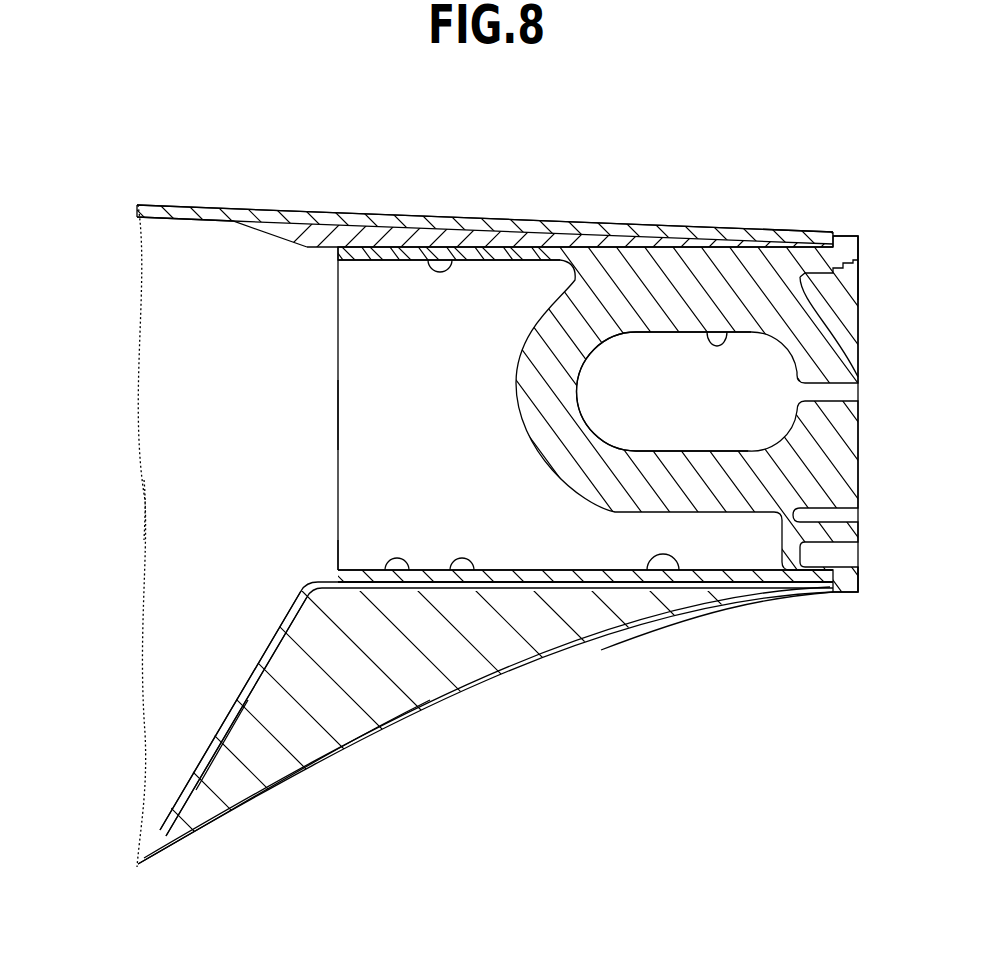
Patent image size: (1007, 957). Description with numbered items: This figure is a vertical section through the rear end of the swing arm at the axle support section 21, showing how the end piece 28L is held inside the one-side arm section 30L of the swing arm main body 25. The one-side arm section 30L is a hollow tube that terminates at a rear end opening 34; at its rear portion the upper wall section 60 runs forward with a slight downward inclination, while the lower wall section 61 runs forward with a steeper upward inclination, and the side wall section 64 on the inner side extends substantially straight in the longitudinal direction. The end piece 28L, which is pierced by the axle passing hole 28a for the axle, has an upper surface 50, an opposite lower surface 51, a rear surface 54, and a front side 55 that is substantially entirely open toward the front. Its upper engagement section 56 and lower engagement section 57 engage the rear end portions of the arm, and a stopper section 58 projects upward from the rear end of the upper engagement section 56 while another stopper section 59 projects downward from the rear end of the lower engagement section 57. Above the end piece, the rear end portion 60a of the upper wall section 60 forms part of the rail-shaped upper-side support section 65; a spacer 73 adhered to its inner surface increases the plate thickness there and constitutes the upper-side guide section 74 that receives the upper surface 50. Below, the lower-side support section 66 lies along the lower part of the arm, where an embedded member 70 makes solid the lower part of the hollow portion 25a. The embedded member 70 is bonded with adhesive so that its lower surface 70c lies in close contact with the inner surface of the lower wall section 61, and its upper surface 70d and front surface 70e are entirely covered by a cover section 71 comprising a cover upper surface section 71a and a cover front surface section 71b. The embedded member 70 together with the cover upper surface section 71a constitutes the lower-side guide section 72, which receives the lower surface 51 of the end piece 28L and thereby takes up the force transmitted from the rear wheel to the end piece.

The axle support section 21 is at (797, 210).
The swing arm main body 25 is at (178, 202).
The hollow portion 25a is at (276, 567).
The end piece 28L is at (333, 331).
The axle passing hole 28a is at (728, 336).
The one-side arm section 30L is at (207, 210).
The rear end opening 34 is at (842, 287).
The upper surface 50 is at (497, 246).
The lower surface 51 is at (555, 590).
The rear surface 54 is at (860, 312).
The front side 55 is at (335, 412).
The upper engagement section 56 is at (541, 244).
The lower engagement section 57 is at (608, 590).
The stopper section 58 is at (848, 234).
The stopper section 59 is at (851, 598).
The upper wall section 60 is at (256, 205).
The rear end portion 60a is at (625, 226).
The lower wall section 61 is at (238, 814).
The side wall section 64 is at (180, 508).
The upper-side support section 65 is at (665, 222).
The lower-side support section 66 is at (642, 642).
The embedded member 70 is at (245, 713).
The lower surface 70c is at (432, 702).
The upper surface 70d is at (694, 574).
The front surface 70e is at (252, 698).
The cover section 71 is at (254, 666).
The cover upper surface section 71a is at (474, 592).
The cover front surface section 71b is at (232, 742).
The lower-side guide section 72 is at (384, 600).
The spacer 73 is at (404, 233).
The upper-side guide section 74 is at (450, 258).